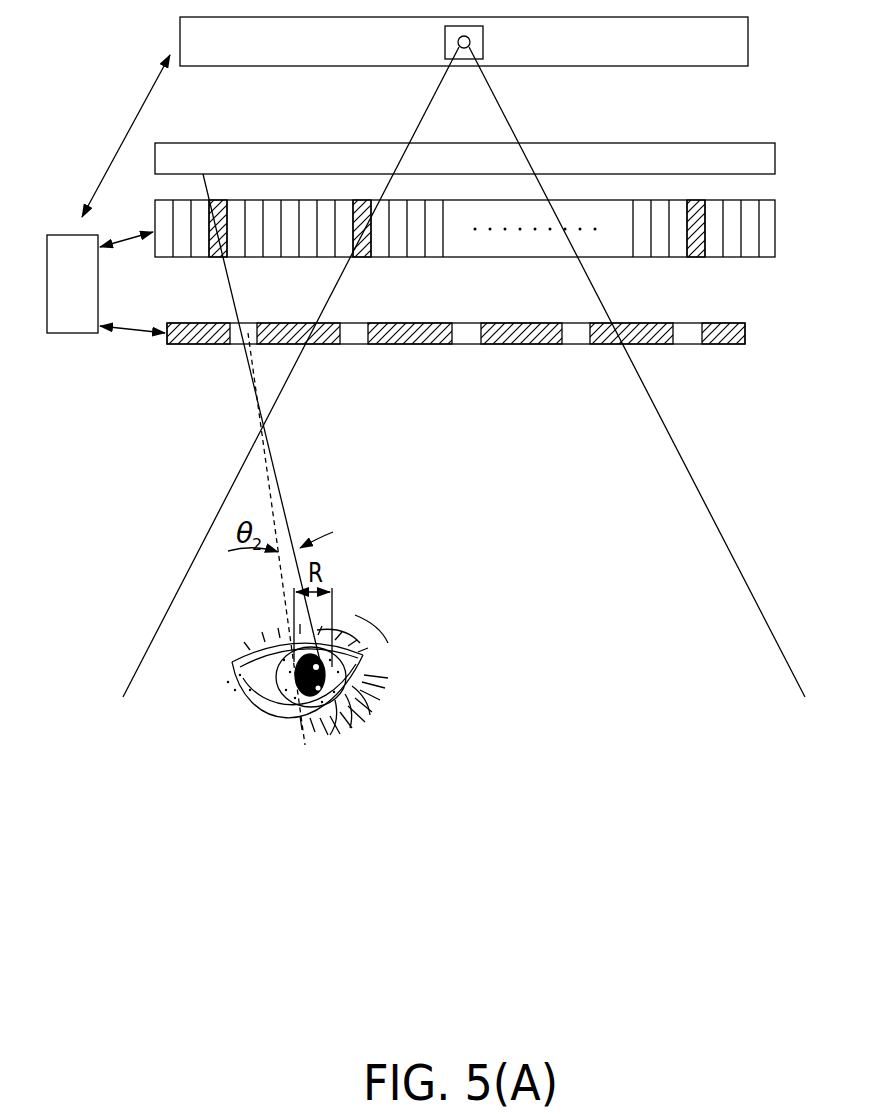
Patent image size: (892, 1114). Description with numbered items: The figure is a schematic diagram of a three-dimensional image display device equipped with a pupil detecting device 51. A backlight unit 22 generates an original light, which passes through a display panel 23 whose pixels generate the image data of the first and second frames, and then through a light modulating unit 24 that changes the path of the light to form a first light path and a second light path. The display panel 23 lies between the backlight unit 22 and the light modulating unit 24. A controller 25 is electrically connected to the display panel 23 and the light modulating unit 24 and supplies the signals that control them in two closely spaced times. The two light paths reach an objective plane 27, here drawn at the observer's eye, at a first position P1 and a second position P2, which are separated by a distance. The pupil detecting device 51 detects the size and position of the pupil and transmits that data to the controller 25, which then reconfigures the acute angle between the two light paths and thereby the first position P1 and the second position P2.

The pupil detecting device 51 is at (750, 42).
The backlight unit 22 is at (777, 160).
The display panel 23 is at (777, 228).
The light modulating unit 24 is at (747, 333).
The controller 25 is at (61, 235).
The objective plane 27 is at (308, 722).
The first position P1 is at (333, 668).
The second position P2 is at (262, 683).